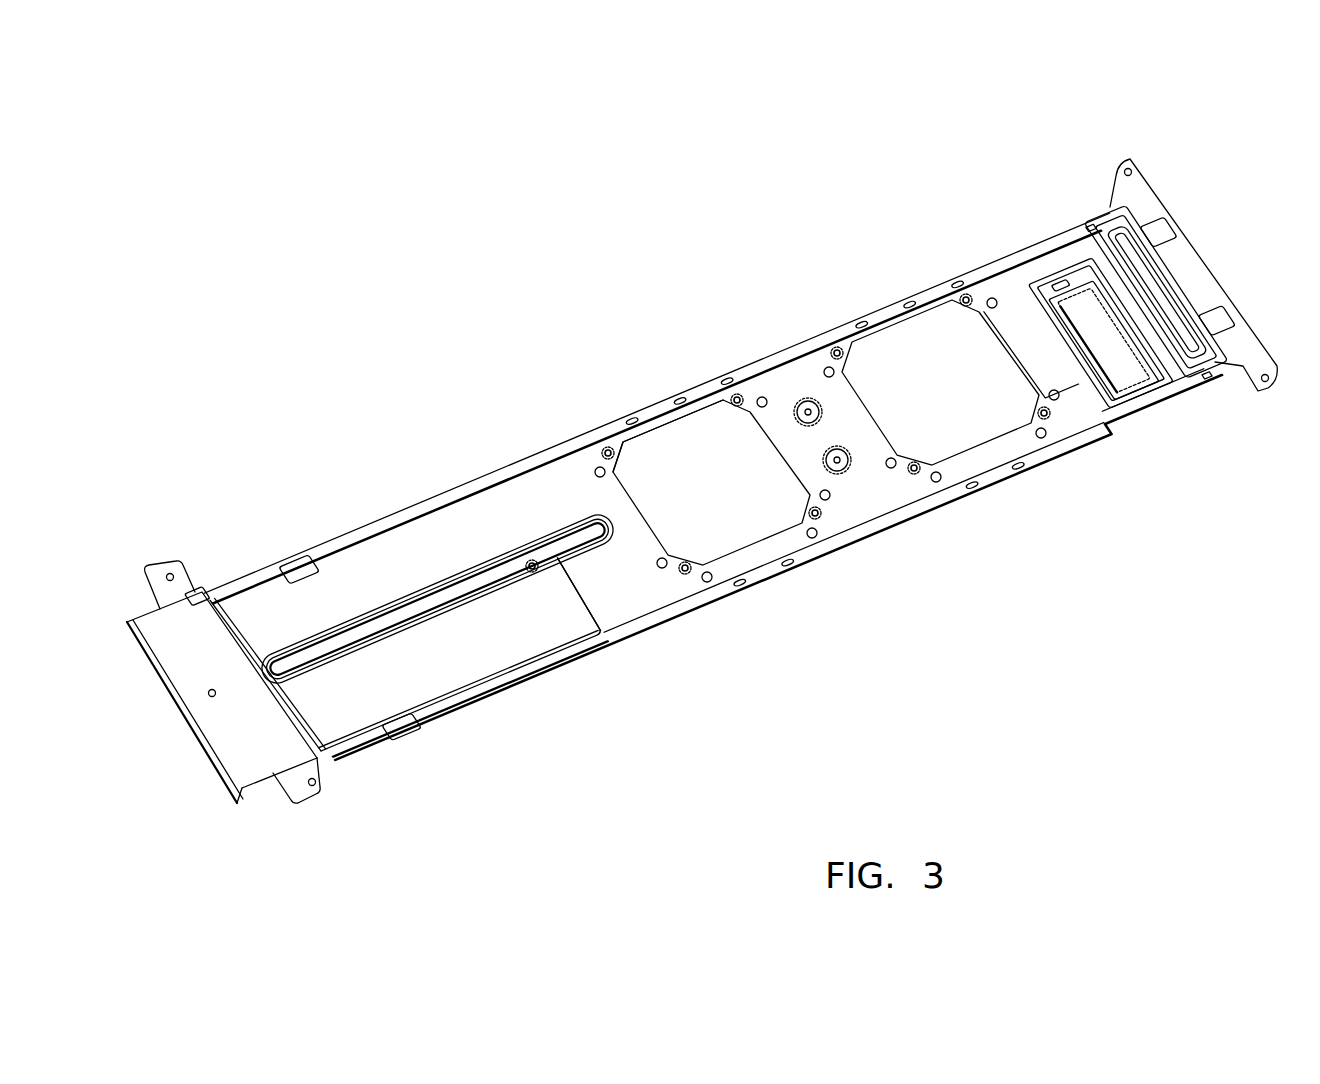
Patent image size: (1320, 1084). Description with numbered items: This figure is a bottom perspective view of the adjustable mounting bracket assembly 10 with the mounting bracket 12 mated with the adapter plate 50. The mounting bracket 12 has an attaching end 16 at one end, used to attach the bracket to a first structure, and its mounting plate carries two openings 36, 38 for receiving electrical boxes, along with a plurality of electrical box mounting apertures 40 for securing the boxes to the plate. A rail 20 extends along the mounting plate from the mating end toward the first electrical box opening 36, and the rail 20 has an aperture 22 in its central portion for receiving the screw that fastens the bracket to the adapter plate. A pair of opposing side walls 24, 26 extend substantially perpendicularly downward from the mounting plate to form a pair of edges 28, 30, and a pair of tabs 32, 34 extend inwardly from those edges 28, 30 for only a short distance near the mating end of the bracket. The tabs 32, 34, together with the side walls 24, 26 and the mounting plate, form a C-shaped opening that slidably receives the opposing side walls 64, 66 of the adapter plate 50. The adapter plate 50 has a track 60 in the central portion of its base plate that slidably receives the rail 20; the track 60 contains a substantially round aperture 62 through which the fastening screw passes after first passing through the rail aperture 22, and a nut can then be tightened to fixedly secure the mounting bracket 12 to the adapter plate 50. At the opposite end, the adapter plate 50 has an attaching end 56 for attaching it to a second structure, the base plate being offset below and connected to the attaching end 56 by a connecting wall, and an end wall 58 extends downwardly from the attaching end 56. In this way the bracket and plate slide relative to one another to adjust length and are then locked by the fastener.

The adjustable mounting bracket assembly 10 is at (614, 313).
The mounting bracket 12 is at (1098, 479).
The attaching end 16 is at (1187, 228).
The rail 20 is at (580, 535).
The aperture 22 is at (597, 543).
The side wall 24 is at (910, 507).
The side wall 26 is at (793, 348).
The edge 28 is at (688, 612).
The edge 30 is at (617, 436).
The tab 32 is at (405, 735).
The tab 34 is at (293, 566).
The opening 36 is at (693, 503).
The opening 38 is at (919, 405).
The electrical box mounting aperture 40 is at (991, 298).
The adapter plate 50 is at (512, 650).
The attaching end 56 is at (258, 740).
The end wall 58 is at (167, 700).
The track 60 is at (452, 588).
The aperture 62 is at (528, 562).
The side wall 64 is at (348, 762).
The side wall 66 is at (238, 588).